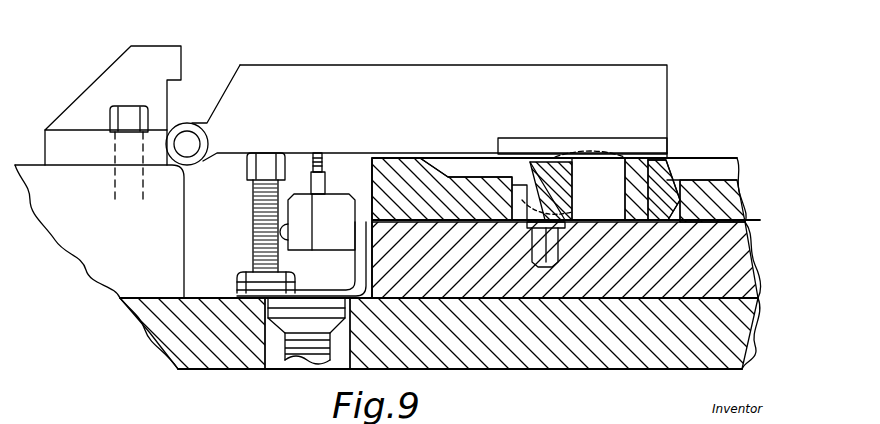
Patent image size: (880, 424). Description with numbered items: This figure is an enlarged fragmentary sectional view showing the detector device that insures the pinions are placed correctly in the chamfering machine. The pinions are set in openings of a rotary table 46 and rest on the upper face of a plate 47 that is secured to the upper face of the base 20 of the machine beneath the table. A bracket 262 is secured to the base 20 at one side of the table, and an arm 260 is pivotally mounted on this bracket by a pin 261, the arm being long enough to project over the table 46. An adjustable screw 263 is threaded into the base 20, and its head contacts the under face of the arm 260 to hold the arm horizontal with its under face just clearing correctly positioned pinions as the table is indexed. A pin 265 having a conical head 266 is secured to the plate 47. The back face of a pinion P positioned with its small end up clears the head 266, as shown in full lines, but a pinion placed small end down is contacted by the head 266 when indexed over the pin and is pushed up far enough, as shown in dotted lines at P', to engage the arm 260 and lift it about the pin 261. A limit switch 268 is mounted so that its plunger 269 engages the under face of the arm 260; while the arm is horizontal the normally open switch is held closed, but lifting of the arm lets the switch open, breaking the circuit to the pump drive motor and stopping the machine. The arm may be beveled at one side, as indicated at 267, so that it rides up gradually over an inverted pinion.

The base 20 is at (175, 340).
The rotary table 46 is at (712, 185).
The plate 47 is at (748, 262).
The arm 260 is at (528, 78).
The pin 261 is at (184, 139).
The bracket 262 is at (155, 57).
The adjustable screw 263 is at (258, 192).
The pin 265 is at (540, 246).
The conical head 266 is at (543, 191).
The bevel 267 is at (542, 143).
The limit switch 268 is at (332, 205).
The plunger 269 is at (328, 160).
The pinion P is at (674, 172).
The inverted pinion P' is at (591, 128).